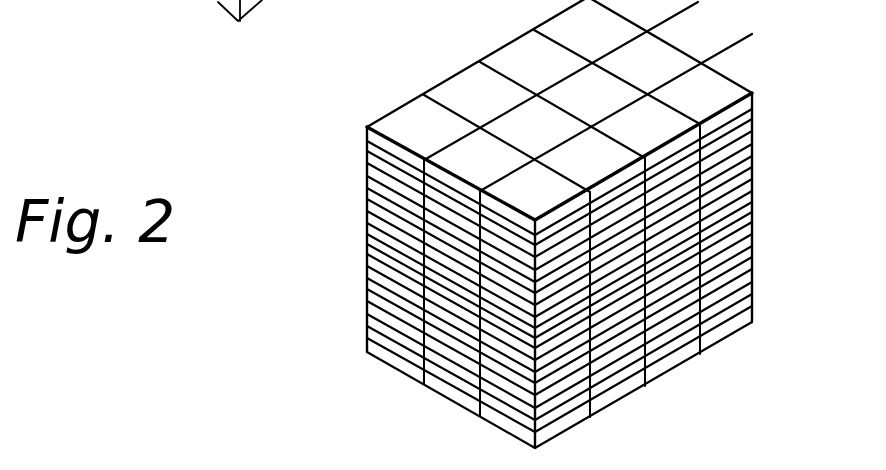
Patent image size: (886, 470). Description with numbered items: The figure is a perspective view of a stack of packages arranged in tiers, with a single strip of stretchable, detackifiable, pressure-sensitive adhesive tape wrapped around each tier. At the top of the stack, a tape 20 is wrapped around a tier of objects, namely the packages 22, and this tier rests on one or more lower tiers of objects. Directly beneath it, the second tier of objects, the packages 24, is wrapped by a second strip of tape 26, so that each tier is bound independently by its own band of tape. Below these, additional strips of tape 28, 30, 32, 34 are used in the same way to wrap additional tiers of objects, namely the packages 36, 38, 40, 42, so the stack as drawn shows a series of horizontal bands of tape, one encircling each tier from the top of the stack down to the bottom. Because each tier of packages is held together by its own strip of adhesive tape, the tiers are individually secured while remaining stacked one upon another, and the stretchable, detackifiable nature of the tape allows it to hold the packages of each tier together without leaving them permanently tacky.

The tape 20 is at (376, 152).
The packages 22 is at (510, 192).
The packages 24 is at (378, 203).
The second strip of tape 26 is at (378, 187).
The strip of tape 28 is at (372, 228).
The strip of tape 30 is at (376, 262).
The strip of tape 32 is at (372, 300).
The strip of tape 34 is at (372, 345).
The packages 36 is at (692, 236).
The packages 38 is at (686, 270).
The packages 40 is at (380, 310).
The packages 42 is at (497, 417).